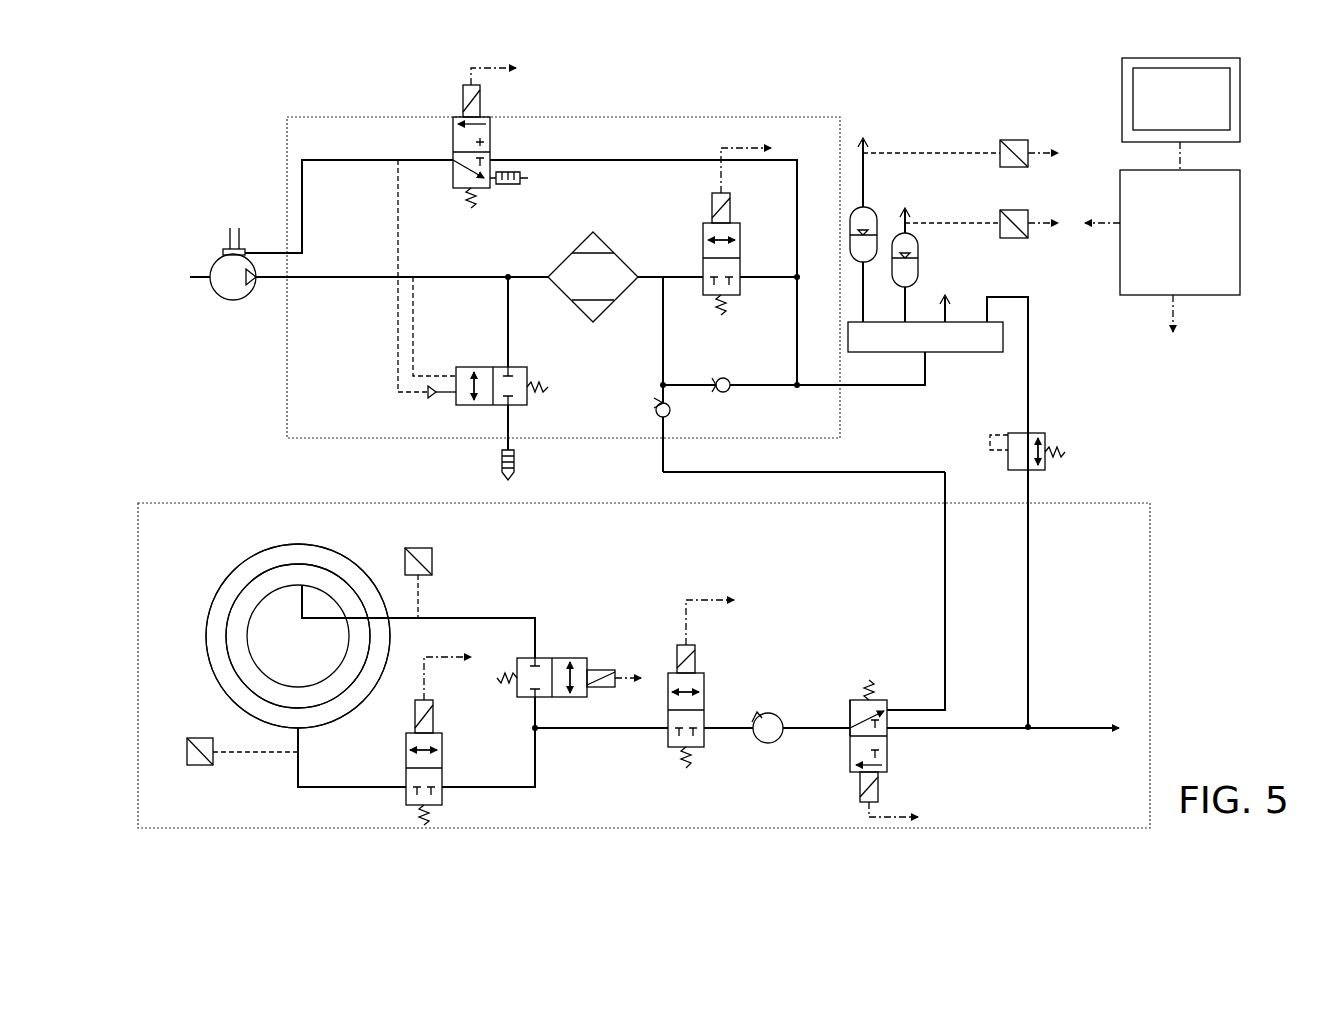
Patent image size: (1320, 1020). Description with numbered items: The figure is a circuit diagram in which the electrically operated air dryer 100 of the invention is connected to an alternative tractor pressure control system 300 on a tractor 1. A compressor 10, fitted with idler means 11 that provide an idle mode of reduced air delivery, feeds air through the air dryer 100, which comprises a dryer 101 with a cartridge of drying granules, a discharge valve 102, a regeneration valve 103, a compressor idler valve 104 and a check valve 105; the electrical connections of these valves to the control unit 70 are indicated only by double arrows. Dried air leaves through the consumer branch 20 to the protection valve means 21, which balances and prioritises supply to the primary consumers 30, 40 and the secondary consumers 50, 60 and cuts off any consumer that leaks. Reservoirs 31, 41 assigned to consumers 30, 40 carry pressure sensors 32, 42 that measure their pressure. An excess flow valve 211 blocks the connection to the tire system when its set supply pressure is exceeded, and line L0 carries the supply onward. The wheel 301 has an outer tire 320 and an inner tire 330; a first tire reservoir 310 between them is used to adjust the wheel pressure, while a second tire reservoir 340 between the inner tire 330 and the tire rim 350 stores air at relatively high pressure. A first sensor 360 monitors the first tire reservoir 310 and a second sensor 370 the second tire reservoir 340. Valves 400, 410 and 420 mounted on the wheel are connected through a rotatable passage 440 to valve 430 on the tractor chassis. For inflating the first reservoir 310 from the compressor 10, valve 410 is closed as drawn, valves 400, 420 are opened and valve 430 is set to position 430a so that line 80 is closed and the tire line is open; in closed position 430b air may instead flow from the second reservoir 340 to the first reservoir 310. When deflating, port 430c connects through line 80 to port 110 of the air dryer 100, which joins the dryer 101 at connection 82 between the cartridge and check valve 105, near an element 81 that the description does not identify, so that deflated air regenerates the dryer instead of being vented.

The tractor 1 is at (256, 184).
The compressor 10 is at (240, 292).
The idler means 11 is at (224, 250).
The electrically operated air dryer 100 is at (372, 117).
The dryer 101 is at (562, 265).
The discharge valve 102 is at (456, 402).
The regeneration valve 103 is at (703, 228).
The compressor idler valve 104 is at (462, 143).
The check valve 105 is at (728, 378).
The port 110 is at (660, 468).
The consumer branch 20 is at (855, 388).
The protection valve means 21 is at (945, 356).
The excess flow valve 211 is at (1012, 462).
The consumer 30 is at (864, 165).
The reservoir 31 is at (850, 226).
The pressure sensor 32 is at (1013, 148).
The consumer 40 is at (905, 215).
The reservoir 41 is at (902, 266).
The pressure sensor 42 is at (1013, 218).
The consumer 50 is at (945, 300).
The consumer 60 is at (990, 297).
The line L0 is at (1010, 300).
The control unit 70 is at (1125, 190).
The line 80 is at (943, 558).
The check valve 81 is at (656, 410).
The connection 82 is at (662, 384).
The tractor pressure control system 300 is at (304, 503).
The wheel 301 is at (204, 664).
The first tire reservoir 310 is at (324, 554).
The outer tire 320 is at (228, 581).
The inner tire 330 is at (228, 632).
The second tire reservoir 340 is at (326, 688).
The tire rim 350 is at (258, 606).
The first sensor 360 is at (192, 768).
The second sensor 370 is at (432, 560).
The valve 400 is at (406, 800).
The valve 410 is at (580, 656).
The valve 420 is at (668, 745).
The valve 430 is at (850, 770).
The position 430a is at (890, 758).
The closed position 430b is at (850, 712).
The port 430c is at (887, 705).
The rotatable passage 440 is at (762, 715).